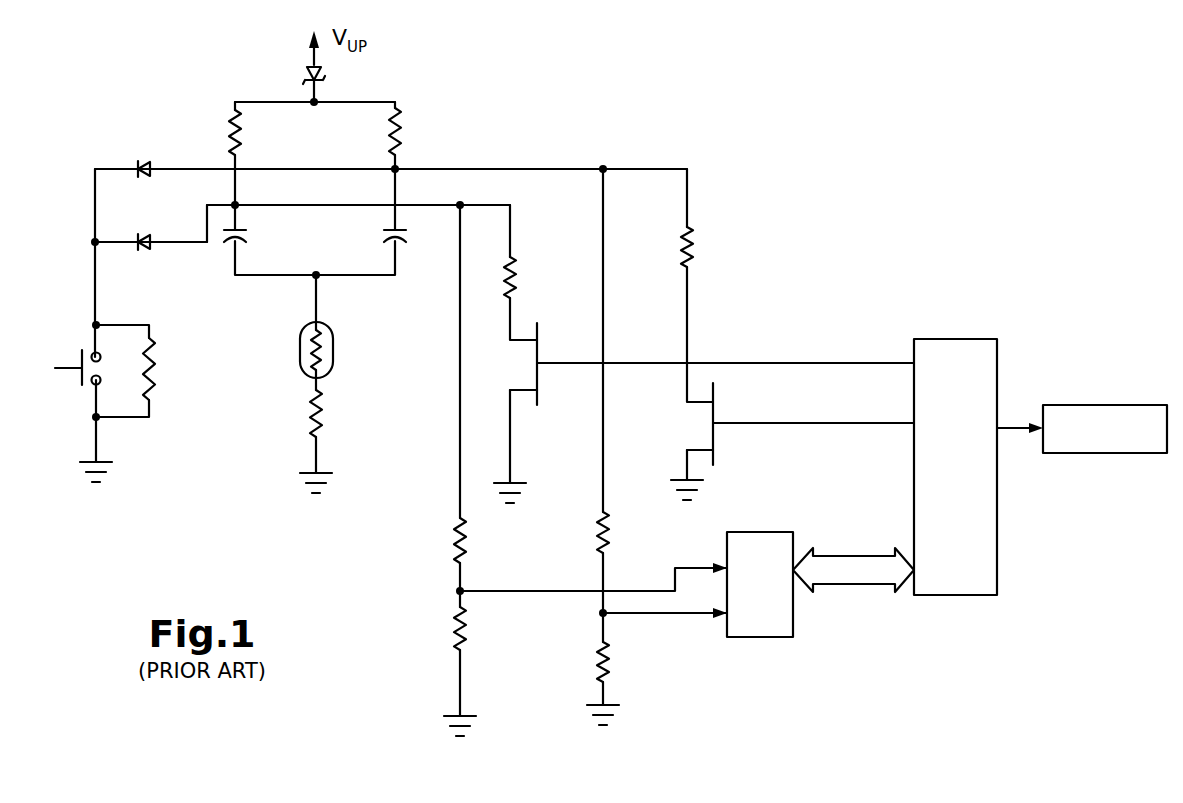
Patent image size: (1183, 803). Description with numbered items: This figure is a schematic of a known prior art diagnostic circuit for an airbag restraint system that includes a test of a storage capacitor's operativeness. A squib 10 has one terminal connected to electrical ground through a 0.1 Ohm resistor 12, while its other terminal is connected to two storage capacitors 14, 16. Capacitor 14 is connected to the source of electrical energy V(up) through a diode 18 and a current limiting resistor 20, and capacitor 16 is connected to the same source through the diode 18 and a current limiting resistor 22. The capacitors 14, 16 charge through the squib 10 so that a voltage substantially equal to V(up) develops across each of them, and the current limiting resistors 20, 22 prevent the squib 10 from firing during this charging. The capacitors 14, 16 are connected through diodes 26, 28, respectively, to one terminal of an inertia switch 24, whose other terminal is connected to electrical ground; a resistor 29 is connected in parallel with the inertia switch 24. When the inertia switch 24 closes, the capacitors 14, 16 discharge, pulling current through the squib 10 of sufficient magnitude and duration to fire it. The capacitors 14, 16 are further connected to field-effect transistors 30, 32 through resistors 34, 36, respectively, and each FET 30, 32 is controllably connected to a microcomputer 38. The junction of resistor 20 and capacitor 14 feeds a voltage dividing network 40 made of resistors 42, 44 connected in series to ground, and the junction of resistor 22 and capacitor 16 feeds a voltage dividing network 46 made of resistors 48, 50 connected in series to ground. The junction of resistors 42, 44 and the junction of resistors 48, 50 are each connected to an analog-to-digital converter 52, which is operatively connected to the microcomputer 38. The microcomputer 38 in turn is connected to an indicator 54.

The squib 10 is at (302, 350).
The 0.1 Ohm resistor 12 is at (314, 402).
The capacitor 14 is at (223, 240).
The capacitor 16 is at (398, 239).
The diode 18 is at (306, 74).
The current limiting resistor 20 is at (233, 130).
The current limiting resistor 22 is at (400, 133).
The inertia switch 24 is at (82, 358).
The diode 26 is at (139, 240).
The diode 28 is at (140, 162).
The resistor 29 is at (155, 372).
The field-effect-transistor 30 is at (538, 333).
The field-effect-transistor 32 is at (715, 440).
The resistor 34 is at (510, 283).
The resistor 36 is at (690, 250).
The microcomputer 38 is at (947, 348).
The voltage dividing network 40 is at (416, 592).
The resistor 42 is at (457, 538).
The resistor 44 is at (457, 622).
The voltage dividing network 46 is at (566, 499).
The resistor 48 is at (600, 530).
The resistor 50 is at (600, 670).
The analog-to-digital converter 52 is at (757, 627).
The indicator 54 is at (1105, 405).